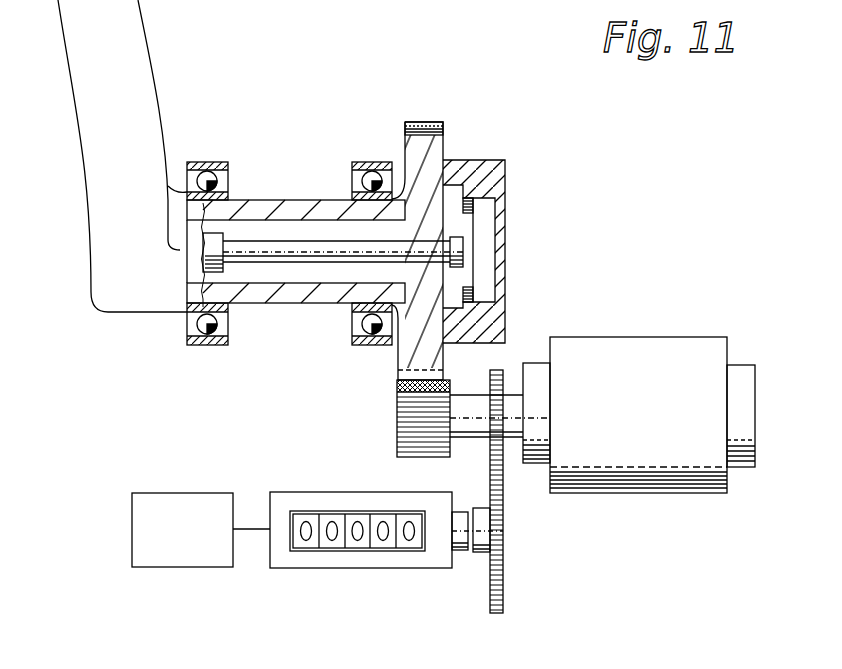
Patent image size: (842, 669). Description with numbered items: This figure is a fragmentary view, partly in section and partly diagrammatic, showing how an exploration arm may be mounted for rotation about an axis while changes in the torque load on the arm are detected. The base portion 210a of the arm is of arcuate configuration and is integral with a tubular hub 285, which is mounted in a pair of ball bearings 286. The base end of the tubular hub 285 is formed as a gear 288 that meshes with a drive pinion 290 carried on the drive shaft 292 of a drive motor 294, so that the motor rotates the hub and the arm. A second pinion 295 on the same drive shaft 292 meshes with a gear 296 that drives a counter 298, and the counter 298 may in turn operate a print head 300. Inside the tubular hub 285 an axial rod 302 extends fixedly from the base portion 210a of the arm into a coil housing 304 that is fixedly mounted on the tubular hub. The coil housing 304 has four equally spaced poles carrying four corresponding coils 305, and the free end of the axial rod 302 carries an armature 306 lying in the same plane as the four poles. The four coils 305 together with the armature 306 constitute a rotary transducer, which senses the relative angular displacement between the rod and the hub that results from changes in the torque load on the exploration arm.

The base portion 210a is at (128, 38).
The tubular hub 285 is at (255, 216).
The ball bearings 286 is at (365, 182).
The gear 288 is at (430, 336).
The drive pinion 290 is at (405, 409).
The drive shaft 292 is at (507, 390).
The drive motor 294 is at (639, 415).
The second pinion 295 is at (492, 420).
The gear 296 is at (503, 494).
The counter 298 is at (340, 480).
The print head 300 is at (243, 473).
The axial rod 302 is at (310, 250).
The coil housing 304 is at (507, 188).
The coils 305 is at (473, 210).
The armature 306 is at (466, 254).